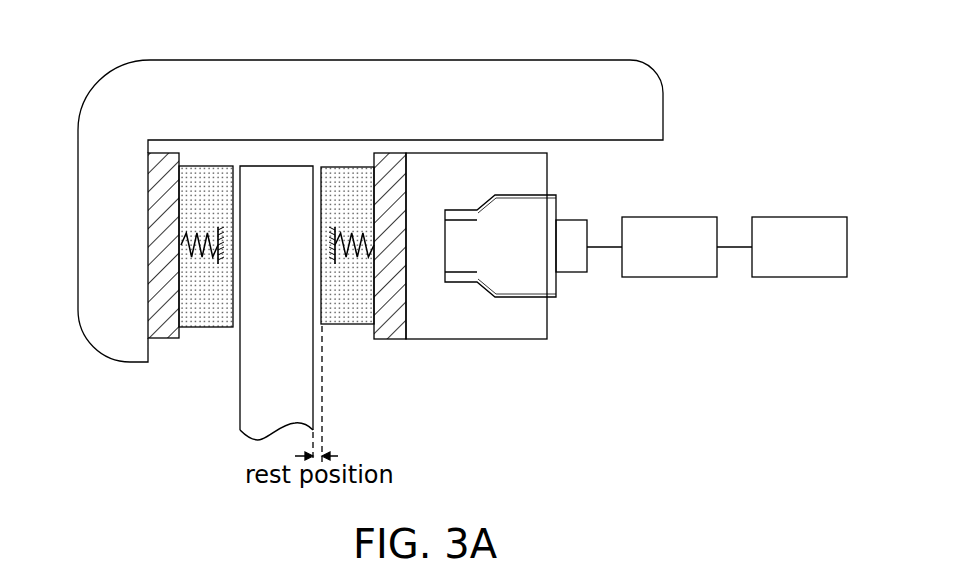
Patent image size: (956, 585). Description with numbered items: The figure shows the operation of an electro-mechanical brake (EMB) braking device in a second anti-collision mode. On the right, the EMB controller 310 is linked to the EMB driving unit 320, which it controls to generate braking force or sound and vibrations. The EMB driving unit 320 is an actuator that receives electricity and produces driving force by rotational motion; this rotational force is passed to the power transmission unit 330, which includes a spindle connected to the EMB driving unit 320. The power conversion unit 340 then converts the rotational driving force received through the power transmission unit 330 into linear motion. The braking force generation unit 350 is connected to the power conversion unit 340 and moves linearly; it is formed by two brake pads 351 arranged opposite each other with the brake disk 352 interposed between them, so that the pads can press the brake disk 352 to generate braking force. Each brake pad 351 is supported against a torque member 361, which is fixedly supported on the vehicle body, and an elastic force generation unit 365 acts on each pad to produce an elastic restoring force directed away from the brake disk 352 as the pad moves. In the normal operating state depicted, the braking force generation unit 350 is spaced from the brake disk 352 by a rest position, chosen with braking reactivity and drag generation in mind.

The EMB controller 310 is at (799, 247).
The EMB driving unit 320 is at (687, 247).
The power transmission unit 330 is at (586, 217).
The power conversion unit 340 is at (490, 340).
The braking force generation unit 350 is at (688, 318).
The brake pad 351 is at (203, 318).
The brake disk 352 is at (253, 408).
The torque member 361 is at (217, 228).
The elastic force generation unit 365 is at (183, 247).